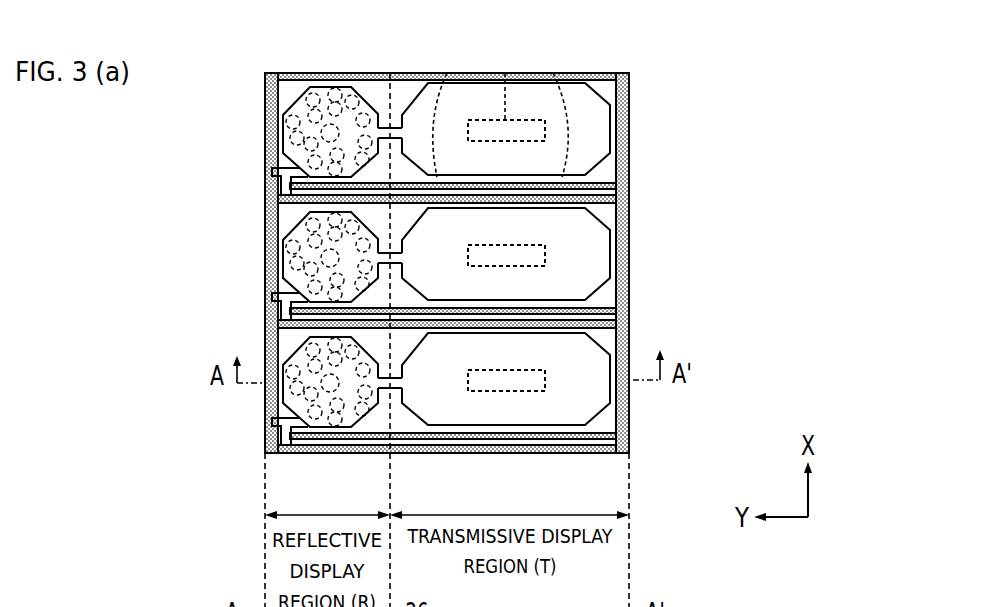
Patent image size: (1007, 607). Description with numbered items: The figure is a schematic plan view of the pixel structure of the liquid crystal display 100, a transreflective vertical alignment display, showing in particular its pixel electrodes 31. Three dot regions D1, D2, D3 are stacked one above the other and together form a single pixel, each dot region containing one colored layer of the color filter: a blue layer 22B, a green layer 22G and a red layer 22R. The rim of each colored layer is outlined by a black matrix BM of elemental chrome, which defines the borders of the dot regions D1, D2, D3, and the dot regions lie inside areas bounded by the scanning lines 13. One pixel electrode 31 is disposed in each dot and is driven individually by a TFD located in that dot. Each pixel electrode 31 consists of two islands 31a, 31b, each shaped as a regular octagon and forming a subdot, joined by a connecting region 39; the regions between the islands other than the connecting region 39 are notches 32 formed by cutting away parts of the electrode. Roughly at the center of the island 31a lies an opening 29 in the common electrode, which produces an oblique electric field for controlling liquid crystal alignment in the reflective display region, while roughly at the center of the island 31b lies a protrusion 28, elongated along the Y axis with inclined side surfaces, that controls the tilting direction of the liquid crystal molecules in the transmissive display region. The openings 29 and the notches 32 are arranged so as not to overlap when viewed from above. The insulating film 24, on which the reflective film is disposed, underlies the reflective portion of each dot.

The liquid crystal display 100 is at (646, 62).
The blue layer 22B is at (623, 82).
The green layer 22G is at (617, 202).
The red layer 22R is at (617, 330).
The black matrix BM is at (275, 205).
The scanning line 13 is at (616, 185).
The pixel electrode 31 is at (612, 135).
The island 31a is at (323, 428).
The island 31b is at (507, 403).
The notch 32 is at (401, 100).
The connecting region 39 is at (400, 405).
The protrusion 28 is at (447, 73).
The opening 29 is at (333, 100).
The insulating film 24 is at (280, 280).
The element TFD is at (268, 160).
The dot region D1 is at (290, 113).
The dot region D2 is at (288, 262).
The dot region D3 is at (290, 352).